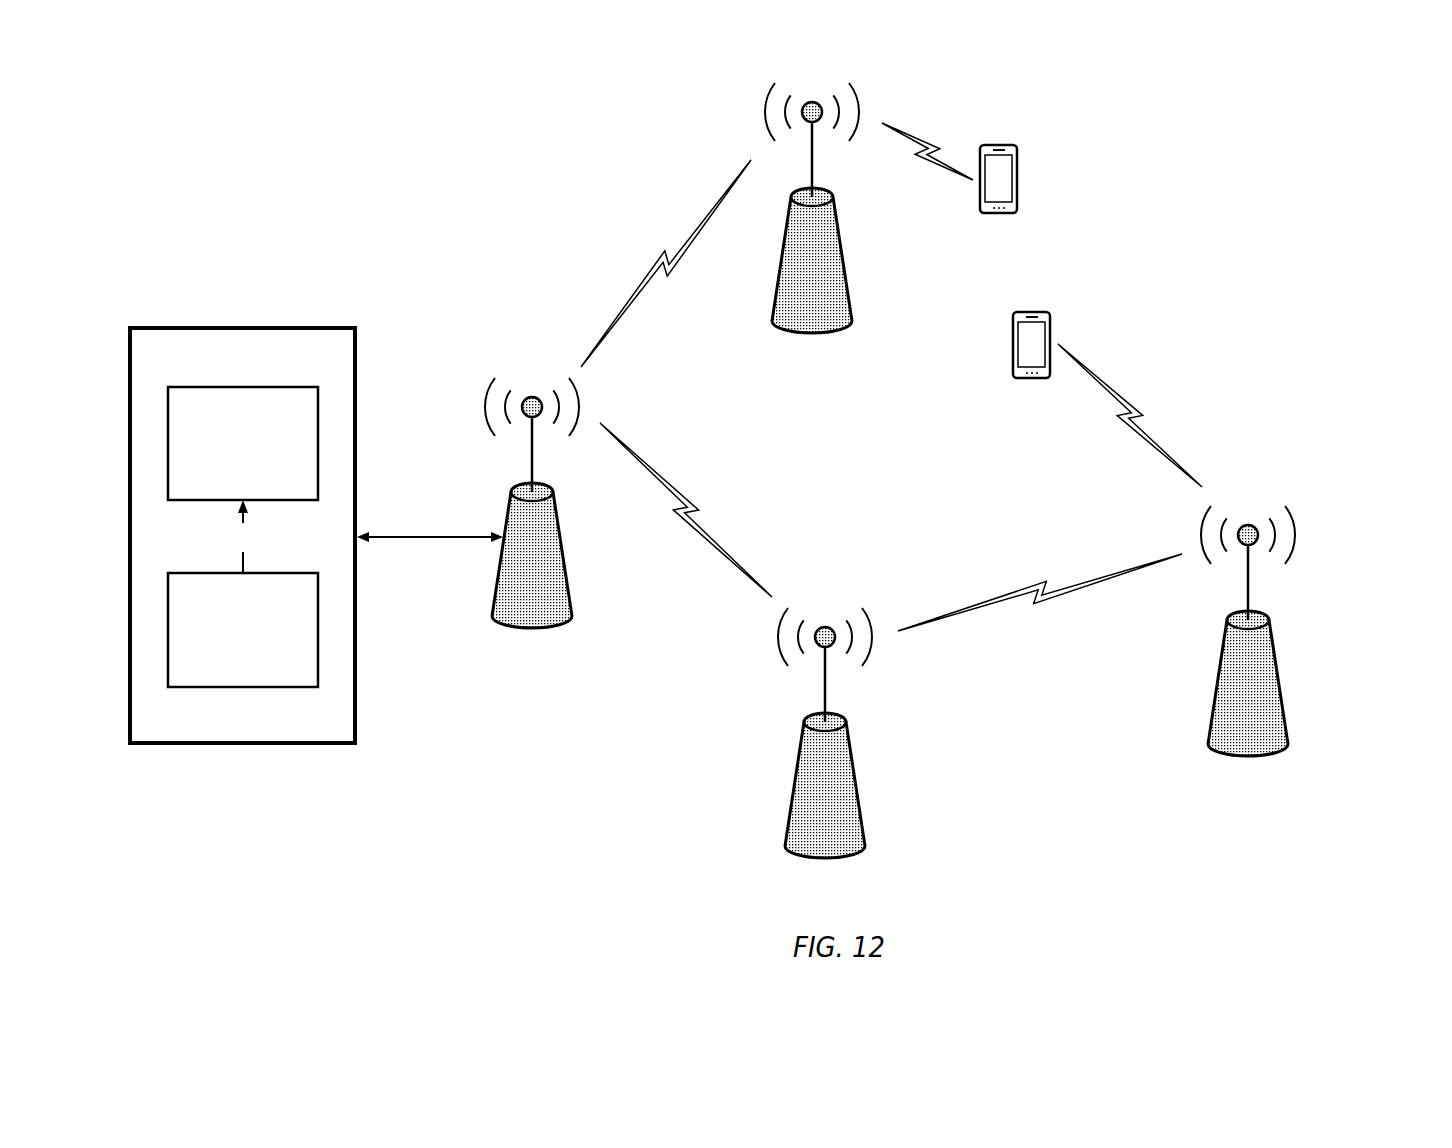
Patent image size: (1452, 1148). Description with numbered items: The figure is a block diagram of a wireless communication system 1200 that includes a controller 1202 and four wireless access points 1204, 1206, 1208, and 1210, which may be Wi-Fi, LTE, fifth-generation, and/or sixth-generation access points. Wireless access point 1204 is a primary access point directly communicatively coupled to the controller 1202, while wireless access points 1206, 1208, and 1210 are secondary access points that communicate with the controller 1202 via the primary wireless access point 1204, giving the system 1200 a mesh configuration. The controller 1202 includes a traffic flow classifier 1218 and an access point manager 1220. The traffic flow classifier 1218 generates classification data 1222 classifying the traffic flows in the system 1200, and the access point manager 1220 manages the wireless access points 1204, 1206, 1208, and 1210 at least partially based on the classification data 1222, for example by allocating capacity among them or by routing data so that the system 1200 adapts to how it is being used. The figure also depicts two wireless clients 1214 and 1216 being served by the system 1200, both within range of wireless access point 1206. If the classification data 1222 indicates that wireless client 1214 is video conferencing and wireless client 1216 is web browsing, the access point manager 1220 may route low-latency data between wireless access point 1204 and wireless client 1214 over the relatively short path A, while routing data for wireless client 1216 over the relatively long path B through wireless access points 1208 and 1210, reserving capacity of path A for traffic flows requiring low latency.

The wireless communication system 1200 is at (1380, 92).
The controller 1202 is at (242, 535).
The wireless access point 1204 is at (532, 503).
The wireless access point 1206 is at (812, 208).
The wireless access point 1208 is at (825, 733).
The wireless access point 1210 is at (1248, 631).
The wireless client 1214 is at (1027, 182).
The wireless client 1216 is at (1005, 343).
The traffic flow classifier 1218 is at (266, 673).
The access point manager 1220 is at (266, 485).
The classification data 1222 is at (243, 536).